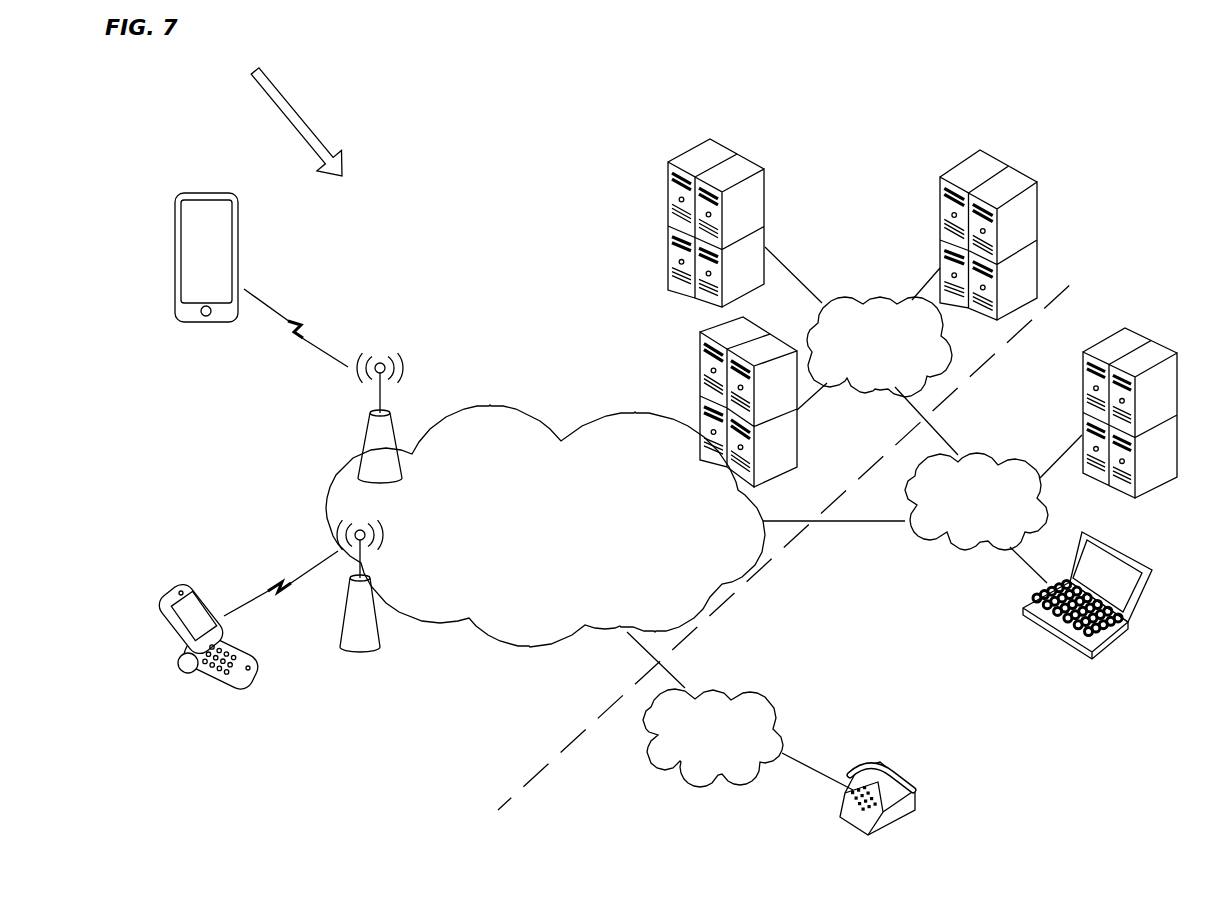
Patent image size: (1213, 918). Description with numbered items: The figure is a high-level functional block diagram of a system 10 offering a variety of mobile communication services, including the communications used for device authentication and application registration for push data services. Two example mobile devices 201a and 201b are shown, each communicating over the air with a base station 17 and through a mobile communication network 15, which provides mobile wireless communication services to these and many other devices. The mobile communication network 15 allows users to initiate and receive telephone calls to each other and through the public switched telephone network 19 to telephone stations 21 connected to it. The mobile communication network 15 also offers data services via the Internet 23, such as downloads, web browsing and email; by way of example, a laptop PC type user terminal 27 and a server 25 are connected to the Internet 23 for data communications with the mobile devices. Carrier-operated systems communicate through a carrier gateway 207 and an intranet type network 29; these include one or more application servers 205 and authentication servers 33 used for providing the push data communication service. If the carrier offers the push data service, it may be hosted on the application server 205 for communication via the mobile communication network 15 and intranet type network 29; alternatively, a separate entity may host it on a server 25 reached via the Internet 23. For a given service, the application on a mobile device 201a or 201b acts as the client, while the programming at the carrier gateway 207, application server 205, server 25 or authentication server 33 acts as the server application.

The system 10 is at (287, 115).
The mobile communication network 15 is at (448, 413).
The base station 17 is at (365, 432).
The public switched telephone network 19 is at (783, 721).
The telephone station 21 is at (840, 823).
The Internet 23 is at (967, 553).
The server 25 is at (1082, 417).
The laptop PC type user terminal 27 is at (1048, 638).
The intranet type network 29 is at (940, 364).
The authentication server 33 is at (1038, 234).
The mobile device 201a is at (153, 613).
The mobile device 201b is at (175, 237).
The application server 205 is at (766, 180).
The carrier gateway 207 is at (700, 370).